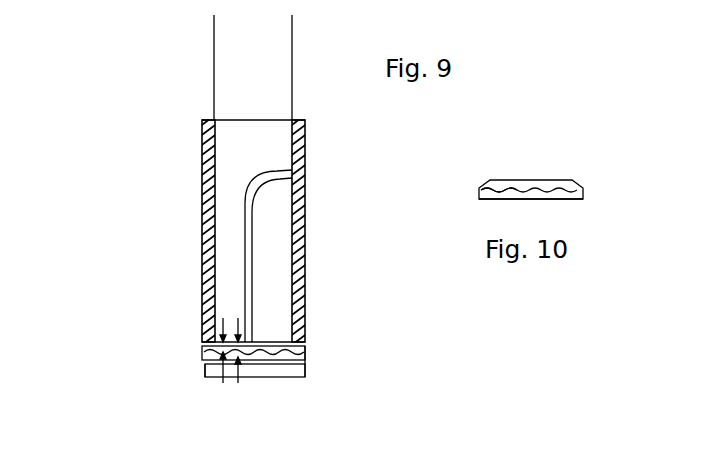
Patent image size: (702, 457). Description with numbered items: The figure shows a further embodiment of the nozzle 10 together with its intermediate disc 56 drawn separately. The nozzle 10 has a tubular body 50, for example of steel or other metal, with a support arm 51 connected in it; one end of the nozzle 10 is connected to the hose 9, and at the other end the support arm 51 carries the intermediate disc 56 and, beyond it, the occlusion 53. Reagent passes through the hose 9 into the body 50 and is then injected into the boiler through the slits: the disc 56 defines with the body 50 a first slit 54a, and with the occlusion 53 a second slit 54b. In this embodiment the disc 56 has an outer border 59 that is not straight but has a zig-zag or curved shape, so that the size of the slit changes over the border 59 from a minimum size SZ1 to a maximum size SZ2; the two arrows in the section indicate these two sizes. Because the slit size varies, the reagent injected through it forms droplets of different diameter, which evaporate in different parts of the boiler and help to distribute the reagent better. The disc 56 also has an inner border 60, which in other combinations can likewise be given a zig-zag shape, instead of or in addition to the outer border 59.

In FIG. 9, the nozzle 10 is at (130, 58).
In FIG. 9, the hose 9 is at (285, 78).
In FIG. 9, the body 50 is at (305, 145).
In FIG. 9, the support arm 51 is at (265, 188).
In FIG. 9, the occlusion 53 is at (205, 369).
In FIG. 9, the first slit 54a is at (305, 353).
In FIG. 9, the second slit 54b is at (305, 370).
In FIG. 9, the intermediate disc 56 is at (305, 362).
In FIG. 10, the intermediate disc 56 is at (594, 156).
In FIG. 10, the outer border 59 is at (556, 195).
In FIG. 10, the inner border 60 is at (515, 178).
In FIG. 9, the minimum size SZ1 is at (230, 368).
In FIG. 9, the maximum size SZ2 is at (242, 368).